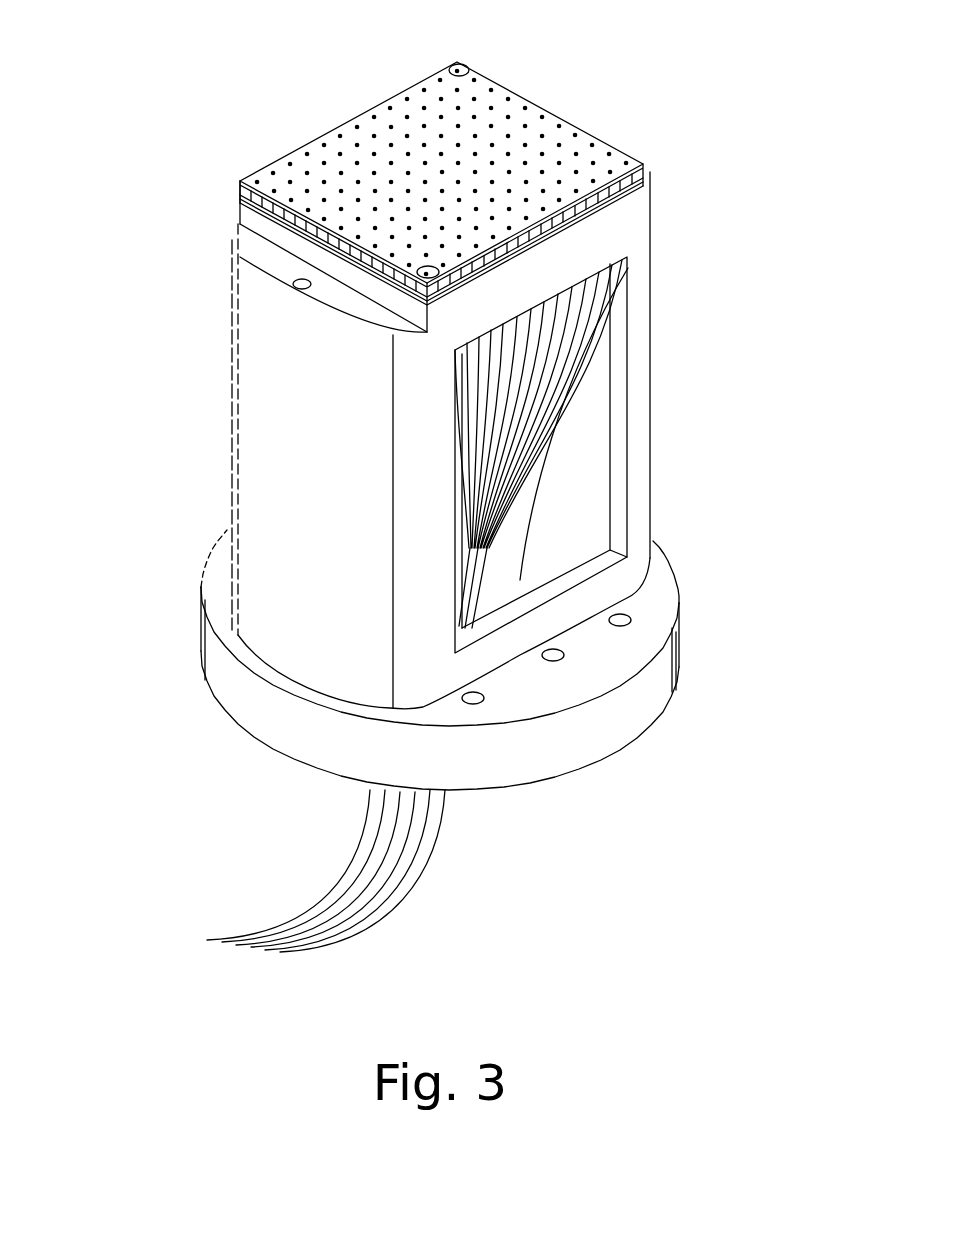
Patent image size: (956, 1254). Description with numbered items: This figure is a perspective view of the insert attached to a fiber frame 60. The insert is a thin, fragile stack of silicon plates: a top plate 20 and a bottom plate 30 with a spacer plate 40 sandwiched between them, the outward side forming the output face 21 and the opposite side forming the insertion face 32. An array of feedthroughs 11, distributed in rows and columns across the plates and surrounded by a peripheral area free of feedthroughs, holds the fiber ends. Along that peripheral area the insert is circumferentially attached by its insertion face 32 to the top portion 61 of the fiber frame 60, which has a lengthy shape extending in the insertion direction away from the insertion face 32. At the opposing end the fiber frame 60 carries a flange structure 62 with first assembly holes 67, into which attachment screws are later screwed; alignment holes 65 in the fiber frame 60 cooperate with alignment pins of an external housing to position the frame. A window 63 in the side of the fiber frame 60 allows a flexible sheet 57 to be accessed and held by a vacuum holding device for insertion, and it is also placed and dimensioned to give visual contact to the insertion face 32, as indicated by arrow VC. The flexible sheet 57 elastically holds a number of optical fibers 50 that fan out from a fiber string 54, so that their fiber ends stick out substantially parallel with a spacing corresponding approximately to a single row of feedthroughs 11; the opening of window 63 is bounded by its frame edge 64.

The feedthrough 11 is at (382, 118).
The top plate 20 is at (238, 180).
The output face 21 is at (533, 100).
The spacer plate 40 is at (238, 190).
The bottom plate 30 is at (238, 200).
The insertion face 32 is at (238, 224).
The alignment hole 65 is at (296, 287).
The top portion 61 is at (587, 231).
The optical fibers 50 is at (578, 410).
The flexible sheet 57 is at (540, 473).
The fiber frame 60 is at (633, 470).
The window 63 is at (620, 506).
The window opening 64 is at (557, 540).
The flange structure 62 is at (680, 660).
The first assembly holes 67 is at (484, 700).
The arrow indicating visual contact VC is at (525, 538).
The fiber string 54 is at (403, 888).